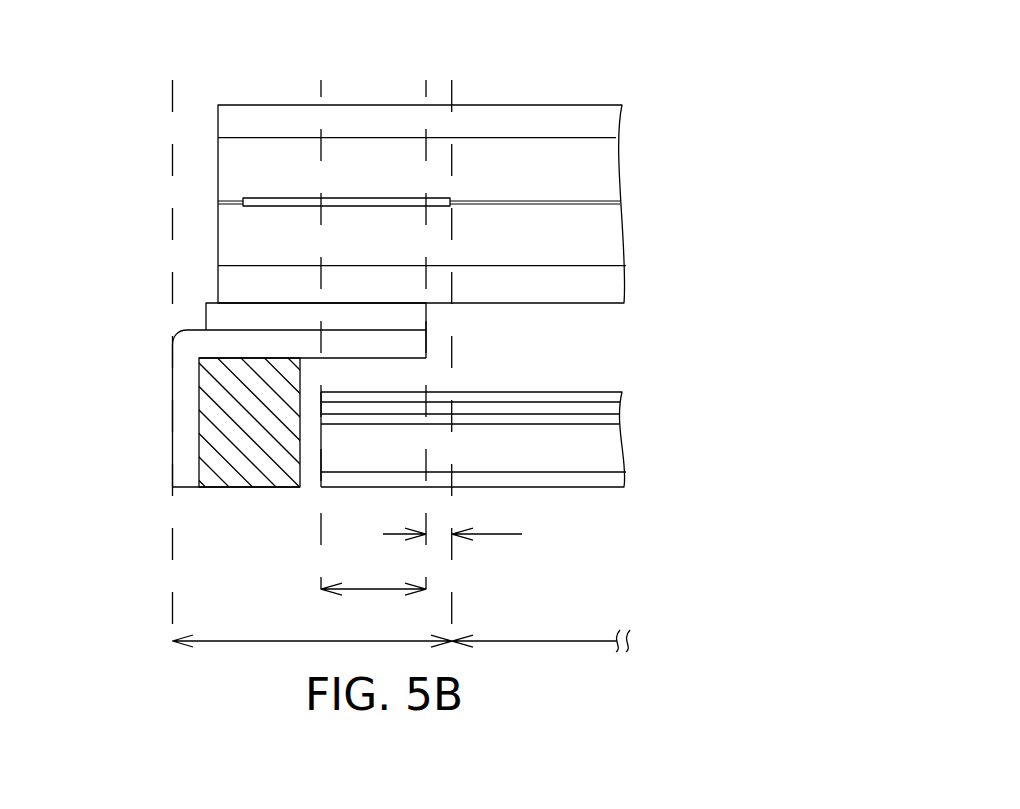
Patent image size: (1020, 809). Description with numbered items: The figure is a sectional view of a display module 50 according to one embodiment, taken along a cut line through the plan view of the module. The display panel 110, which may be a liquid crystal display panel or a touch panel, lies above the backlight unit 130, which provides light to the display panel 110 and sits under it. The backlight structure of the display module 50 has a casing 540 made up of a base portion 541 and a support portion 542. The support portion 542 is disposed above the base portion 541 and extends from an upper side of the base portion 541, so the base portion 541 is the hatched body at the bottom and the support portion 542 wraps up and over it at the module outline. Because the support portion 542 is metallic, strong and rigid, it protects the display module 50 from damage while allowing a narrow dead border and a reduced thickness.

The display module 50 is at (798, 36).
The display panel 110 is at (655, 212).
The backlight unit 130 is at (657, 427).
The casing 540 is at (225, 370).
The base portion 541 is at (208, 453).
The support portion 542 is at (187, 381).